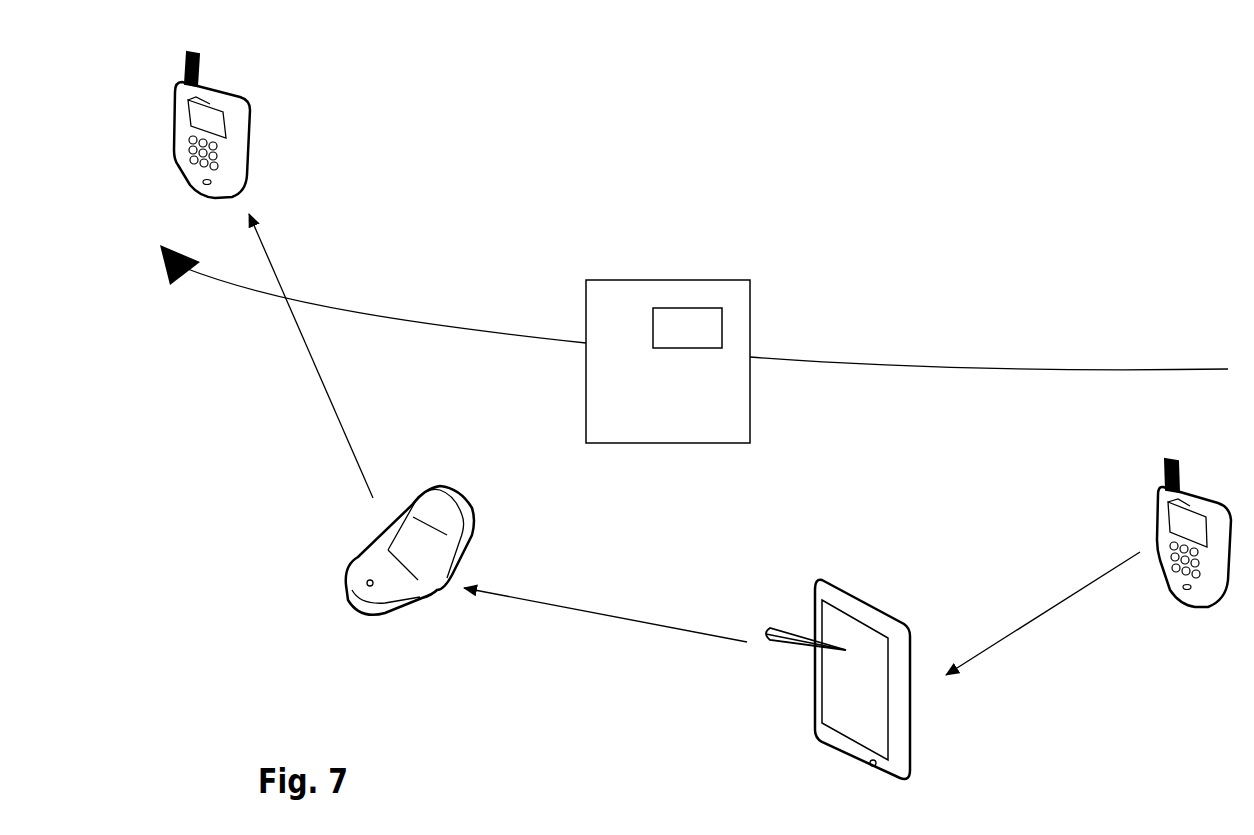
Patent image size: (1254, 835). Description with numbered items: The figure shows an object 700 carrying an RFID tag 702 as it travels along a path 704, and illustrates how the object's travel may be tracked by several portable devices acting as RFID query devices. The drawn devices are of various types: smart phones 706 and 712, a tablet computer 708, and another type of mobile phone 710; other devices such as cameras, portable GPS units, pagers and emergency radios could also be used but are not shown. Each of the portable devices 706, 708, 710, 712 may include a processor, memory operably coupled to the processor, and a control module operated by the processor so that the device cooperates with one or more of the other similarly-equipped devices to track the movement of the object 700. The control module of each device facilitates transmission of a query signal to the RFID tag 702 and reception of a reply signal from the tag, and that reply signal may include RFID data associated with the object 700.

The object 700 is at (687, 414).
The RFID tag 702 is at (687, 328).
The path 704 is at (955, 366).
The smart phone 706 is at (1132, 511).
The tablet computer 708 is at (750, 621).
The mobile phone 710 is at (340, 557).
The smart phone 712 is at (262, 102).